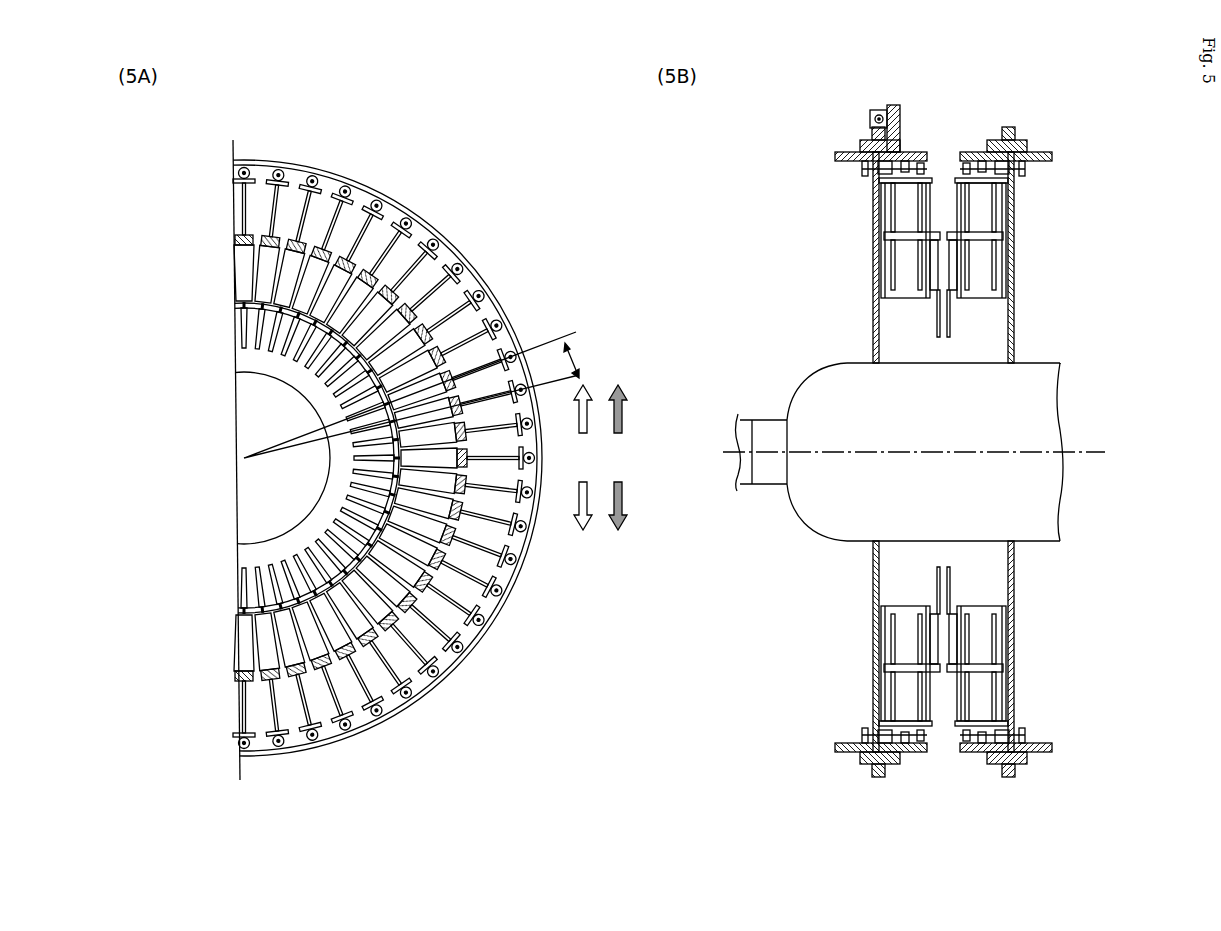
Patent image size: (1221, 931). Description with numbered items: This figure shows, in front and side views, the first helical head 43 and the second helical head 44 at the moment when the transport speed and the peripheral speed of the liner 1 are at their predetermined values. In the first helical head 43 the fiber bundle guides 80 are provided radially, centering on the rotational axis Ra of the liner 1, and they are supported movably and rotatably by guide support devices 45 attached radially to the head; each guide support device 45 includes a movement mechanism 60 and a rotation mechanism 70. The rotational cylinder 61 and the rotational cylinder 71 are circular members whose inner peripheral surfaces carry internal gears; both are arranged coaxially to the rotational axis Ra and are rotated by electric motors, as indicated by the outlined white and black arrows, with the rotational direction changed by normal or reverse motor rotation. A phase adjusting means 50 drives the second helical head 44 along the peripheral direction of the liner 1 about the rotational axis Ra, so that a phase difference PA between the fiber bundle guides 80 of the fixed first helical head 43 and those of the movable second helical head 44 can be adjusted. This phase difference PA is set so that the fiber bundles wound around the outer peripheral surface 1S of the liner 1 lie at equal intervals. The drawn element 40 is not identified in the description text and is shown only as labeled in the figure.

In FIG. 5A, the liner 1 is at (266, 374).
In FIG. 5B, the liner 1 is at (914, 417).
In FIG. 5B, the outer peripheral surface 1S is at (1058, 366).
In FIG. 5B, the cleaning device 40 is at (889, 430).
In FIG. 5A, the first helical head 43 is at (320, 460).
In FIG. 5B, the first helical head 43 is at (930, 440).
In FIG. 5A, the second helical head 44 is at (320, 460).
In FIG. 5B, the second helical head 44 is at (915, 440).
In FIG. 5A, the guide support device 45 is at (458, 306).
In FIG. 5B, the guide support device 45 is at (852, 232).
In FIG. 5B, the phase adjusting means 50 is at (855, 118).
In FIG. 5B, the movement mechanism 60 is at (830, 155).
In FIG. 5A, the rotational cylinder 61 is at (583, 457).
In FIG. 5B, the rotation mechanism 70 is at (973, 138).
In FIG. 5A, the rotational cylinder 71 is at (548, 458).
In FIG. 5A, the fiber bundle guide 80 is at (348, 408).
In FIG. 5B, the fiber bundle guide 80 is at (937, 326).
In FIG. 5A, the rotational axis Ra is at (254, 447).
In FIG. 5B, the rotational axis Ra is at (1098, 452).
In FIG. 5A, the phase difference PA is at (424, 395).